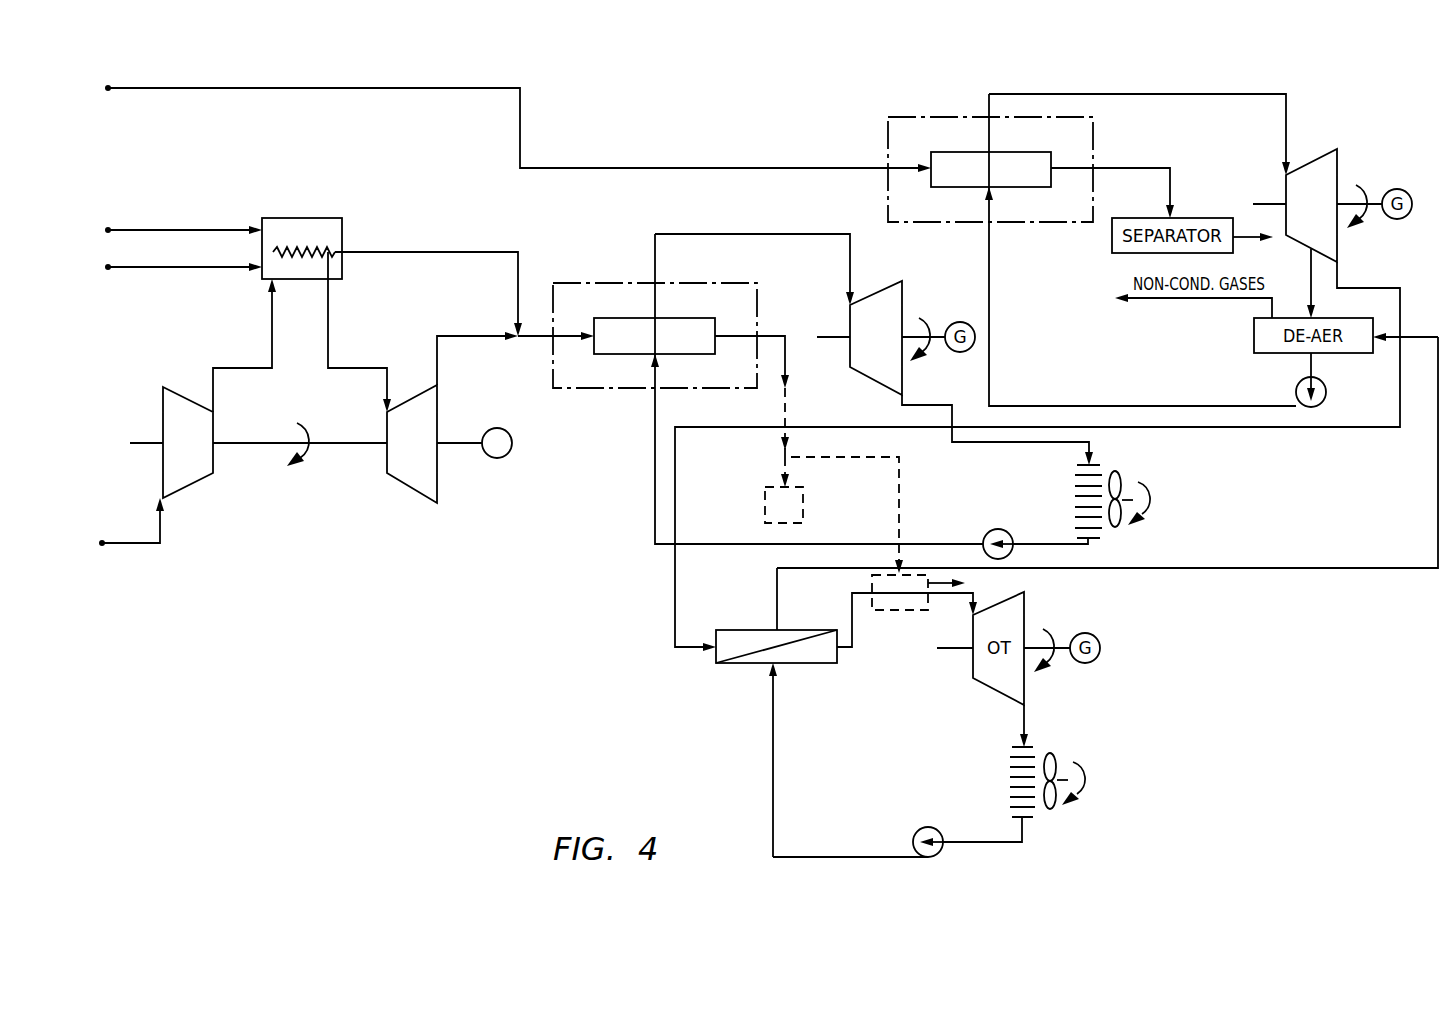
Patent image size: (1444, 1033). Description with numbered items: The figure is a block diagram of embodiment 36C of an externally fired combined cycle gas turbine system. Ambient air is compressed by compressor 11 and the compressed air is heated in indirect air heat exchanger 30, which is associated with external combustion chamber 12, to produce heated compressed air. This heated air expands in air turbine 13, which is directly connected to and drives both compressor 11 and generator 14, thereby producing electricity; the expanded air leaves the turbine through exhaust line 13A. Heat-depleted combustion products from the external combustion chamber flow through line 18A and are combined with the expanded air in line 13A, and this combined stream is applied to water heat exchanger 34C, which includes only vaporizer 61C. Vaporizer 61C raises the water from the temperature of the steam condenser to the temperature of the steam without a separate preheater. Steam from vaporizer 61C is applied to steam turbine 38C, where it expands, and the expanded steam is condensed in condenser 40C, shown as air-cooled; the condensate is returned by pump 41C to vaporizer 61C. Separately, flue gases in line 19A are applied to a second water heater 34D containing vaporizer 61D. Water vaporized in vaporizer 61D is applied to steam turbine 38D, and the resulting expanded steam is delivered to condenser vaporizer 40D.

The compressor 11 is at (164, 386).
The external combustion chamber 12 is at (300, 282).
The air turbine 13 is at (397, 409).
The exhaust line 13A is at (471, 340).
The generator 14 is at (497, 427).
The line 18A is at (448, 250).
The line 19A is at (448, 90).
The indirect air heat exchanger 30 is at (344, 266).
The water heat exchanger 34C is at (757, 301).
The second water heater 34D is at (1093, 135).
The embodiment 36C is at (336, 619).
The steam turbine 38C is at (876, 293).
The steam turbine 38D is at (1303, 166).
The condenser 40C is at (1146, 457).
The condenser vaporizer 40D is at (806, 629).
The pump 41C is at (999, 529).
The vaporizer 61C is at (703, 318).
The vaporizer 61D is at (1012, 152).